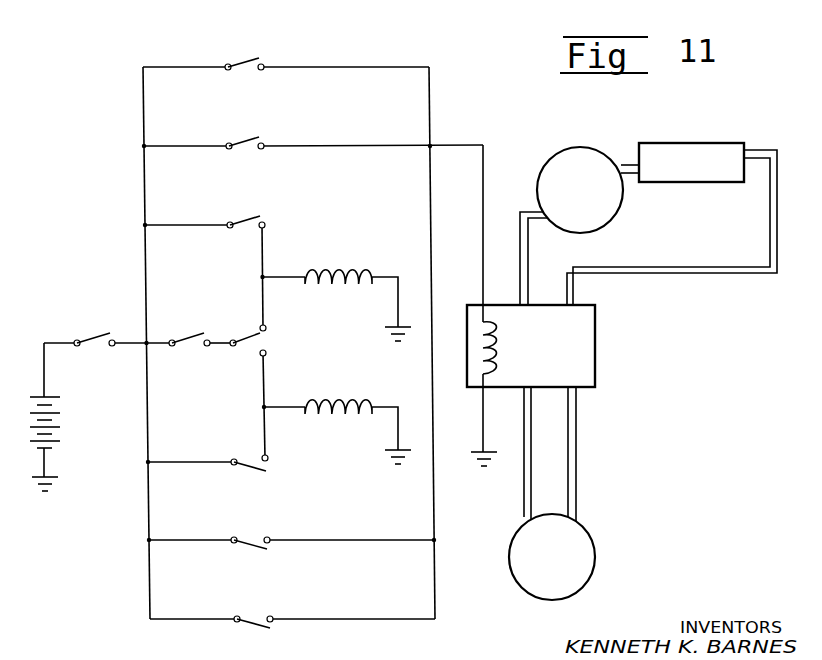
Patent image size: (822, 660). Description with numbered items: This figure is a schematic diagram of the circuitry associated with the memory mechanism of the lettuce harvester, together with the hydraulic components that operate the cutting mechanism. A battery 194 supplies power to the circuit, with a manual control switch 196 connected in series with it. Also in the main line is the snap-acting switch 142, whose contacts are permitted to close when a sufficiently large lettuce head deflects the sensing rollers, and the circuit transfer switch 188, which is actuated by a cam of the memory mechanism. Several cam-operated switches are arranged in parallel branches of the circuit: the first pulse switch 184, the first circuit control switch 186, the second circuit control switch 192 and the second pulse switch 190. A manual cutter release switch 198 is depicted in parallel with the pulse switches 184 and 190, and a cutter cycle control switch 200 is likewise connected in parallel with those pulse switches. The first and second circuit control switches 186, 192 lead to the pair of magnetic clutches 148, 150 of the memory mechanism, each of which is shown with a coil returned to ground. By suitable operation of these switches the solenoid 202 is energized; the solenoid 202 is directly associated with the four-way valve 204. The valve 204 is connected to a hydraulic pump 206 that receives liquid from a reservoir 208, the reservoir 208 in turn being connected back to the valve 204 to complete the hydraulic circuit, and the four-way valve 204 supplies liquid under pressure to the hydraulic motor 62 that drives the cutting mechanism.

The manual cutter release switch 198 is at (253, 57).
The first pulse switch 184 is at (250, 137).
The first circuit control switch 186 is at (253, 215).
The manual control switch 196 is at (100, 333).
The snap-acting switch 142 is at (195, 333).
The circuit transfer switch 188 is at (257, 337).
The battery 194 is at (53, 413).
The magnetic clutch 148 is at (343, 285).
The magnetic clutch 150 is at (347, 417).
The second circuit control switch 192 is at (260, 470).
The second pulse switch 190 is at (252, 537).
The cutter cycle control switch 200 is at (252, 630).
The solenoid 202 is at (475, 337).
The four-way valve 204 is at (588, 343).
The hydraulic pump 206 is at (558, 148).
The reservoir 208 is at (687, 138).
The hydraulic motor 62 is at (595, 548).